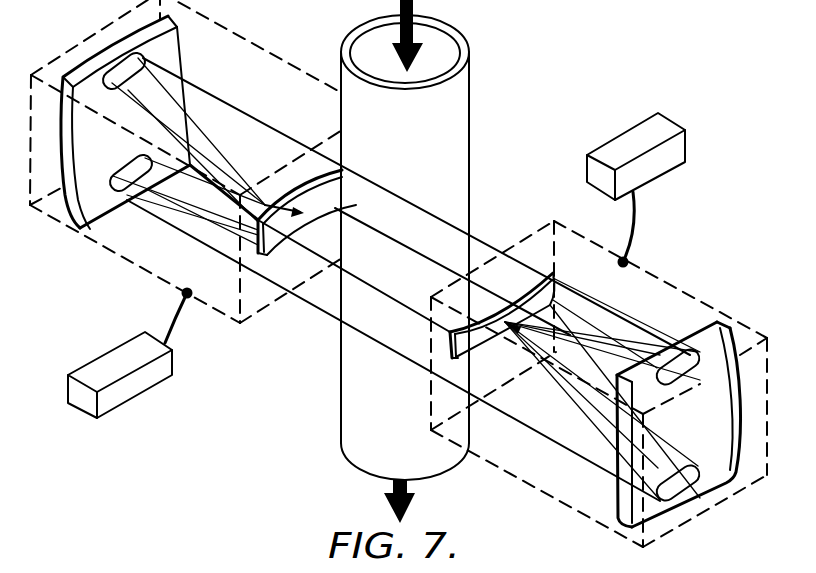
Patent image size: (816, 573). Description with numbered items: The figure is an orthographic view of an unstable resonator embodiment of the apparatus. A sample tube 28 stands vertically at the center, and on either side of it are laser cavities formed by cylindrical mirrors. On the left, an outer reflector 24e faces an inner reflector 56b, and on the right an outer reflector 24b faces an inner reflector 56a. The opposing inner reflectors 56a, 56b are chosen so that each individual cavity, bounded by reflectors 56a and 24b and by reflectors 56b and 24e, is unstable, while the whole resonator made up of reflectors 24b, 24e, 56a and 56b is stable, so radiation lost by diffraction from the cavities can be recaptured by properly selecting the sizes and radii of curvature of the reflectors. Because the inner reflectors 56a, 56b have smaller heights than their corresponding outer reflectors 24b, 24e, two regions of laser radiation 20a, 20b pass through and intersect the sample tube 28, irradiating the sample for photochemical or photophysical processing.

The sample tube 28 is at (340, 370).
The region of laser radiation 20a is at (407, 225).
The region of laser radiation 20b is at (402, 325).
The outer reflector 24e is at (78, 229).
The outer reflector 24b is at (720, 323).
The inner reflector 56a is at (527, 294).
The inner reflector 56b is at (281, 243).